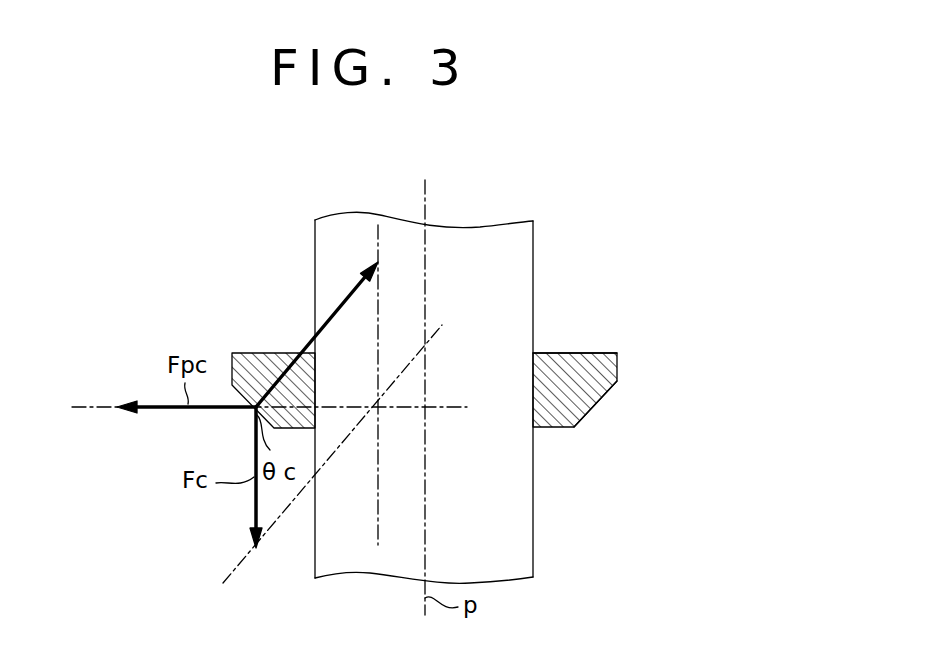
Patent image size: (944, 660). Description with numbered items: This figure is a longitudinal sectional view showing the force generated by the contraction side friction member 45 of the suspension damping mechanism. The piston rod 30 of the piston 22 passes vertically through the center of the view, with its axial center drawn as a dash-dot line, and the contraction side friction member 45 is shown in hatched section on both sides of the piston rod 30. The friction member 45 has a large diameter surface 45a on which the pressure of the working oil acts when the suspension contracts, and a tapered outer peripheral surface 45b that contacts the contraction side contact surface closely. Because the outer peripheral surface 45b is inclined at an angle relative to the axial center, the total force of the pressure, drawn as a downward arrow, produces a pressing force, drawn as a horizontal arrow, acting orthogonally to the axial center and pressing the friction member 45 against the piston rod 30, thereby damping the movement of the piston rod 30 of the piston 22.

The piston 22 is at (544, 527).
The piston rod 30 is at (522, 563).
The contraction side friction member 45 is at (632, 365).
The large diameter surface 45a is at (588, 353).
The outer peripheral surface 45b is at (603, 402).